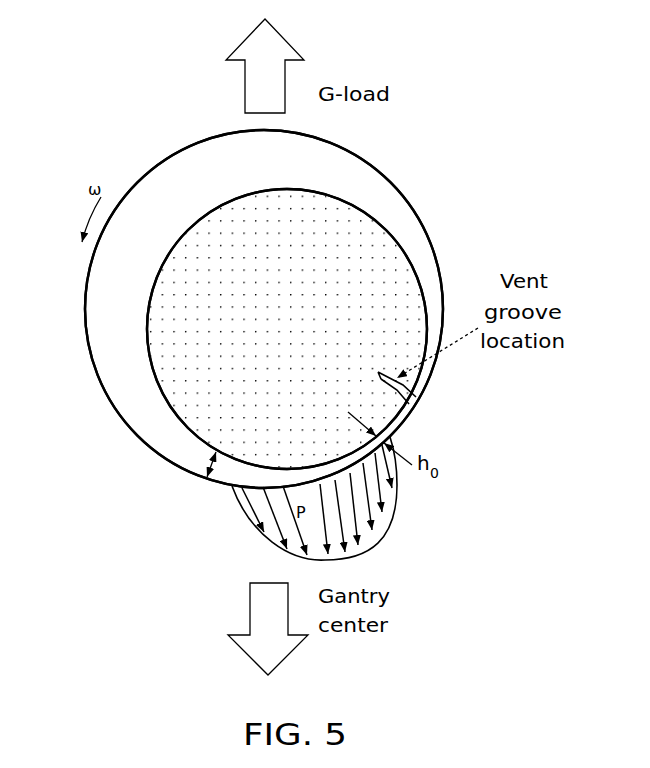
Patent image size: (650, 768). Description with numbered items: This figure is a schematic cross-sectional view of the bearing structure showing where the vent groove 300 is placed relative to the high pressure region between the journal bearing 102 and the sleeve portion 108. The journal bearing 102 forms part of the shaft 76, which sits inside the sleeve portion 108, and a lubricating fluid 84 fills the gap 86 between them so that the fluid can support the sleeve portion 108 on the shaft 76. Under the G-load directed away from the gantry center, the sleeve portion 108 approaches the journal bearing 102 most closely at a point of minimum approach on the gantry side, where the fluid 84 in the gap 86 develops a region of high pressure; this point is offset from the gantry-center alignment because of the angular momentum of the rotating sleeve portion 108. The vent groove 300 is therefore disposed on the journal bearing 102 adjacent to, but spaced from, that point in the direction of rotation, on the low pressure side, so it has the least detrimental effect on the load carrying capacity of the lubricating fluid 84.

The shaft 76 is at (185, 222).
The lubricating fluid 84 is at (131, 401).
The gap 86 is at (203, 463).
The journal bearing 102 is at (373, 218).
The sleeve portion 108 is at (352, 150).
The vent groove 300 is at (422, 400).